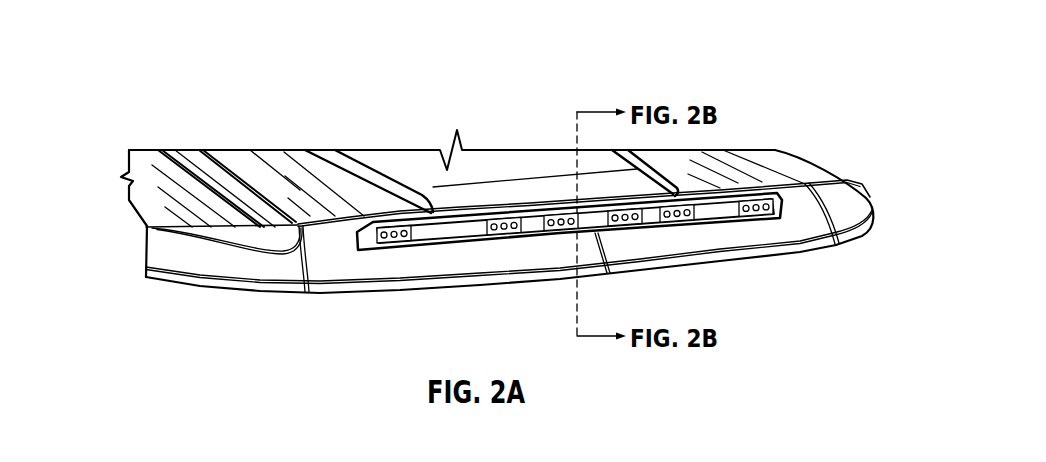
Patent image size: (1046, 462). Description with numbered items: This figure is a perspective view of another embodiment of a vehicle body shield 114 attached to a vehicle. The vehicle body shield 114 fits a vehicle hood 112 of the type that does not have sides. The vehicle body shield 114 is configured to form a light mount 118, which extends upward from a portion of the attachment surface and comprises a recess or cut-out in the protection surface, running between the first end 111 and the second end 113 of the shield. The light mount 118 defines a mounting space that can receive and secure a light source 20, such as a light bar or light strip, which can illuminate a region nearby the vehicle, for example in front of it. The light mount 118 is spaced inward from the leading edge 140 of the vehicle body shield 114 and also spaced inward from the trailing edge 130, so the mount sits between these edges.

The light source 20 is at (489, 227).
The first end 111 is at (124, 270).
The vehicle hood 112 is at (290, 168).
The second end 113 is at (876, 189).
The vehicle body shield 114 is at (267, 217).
The light mount 118 is at (782, 196).
The trailing edge 130 is at (342, 213).
The leading edge 140 is at (672, 263).